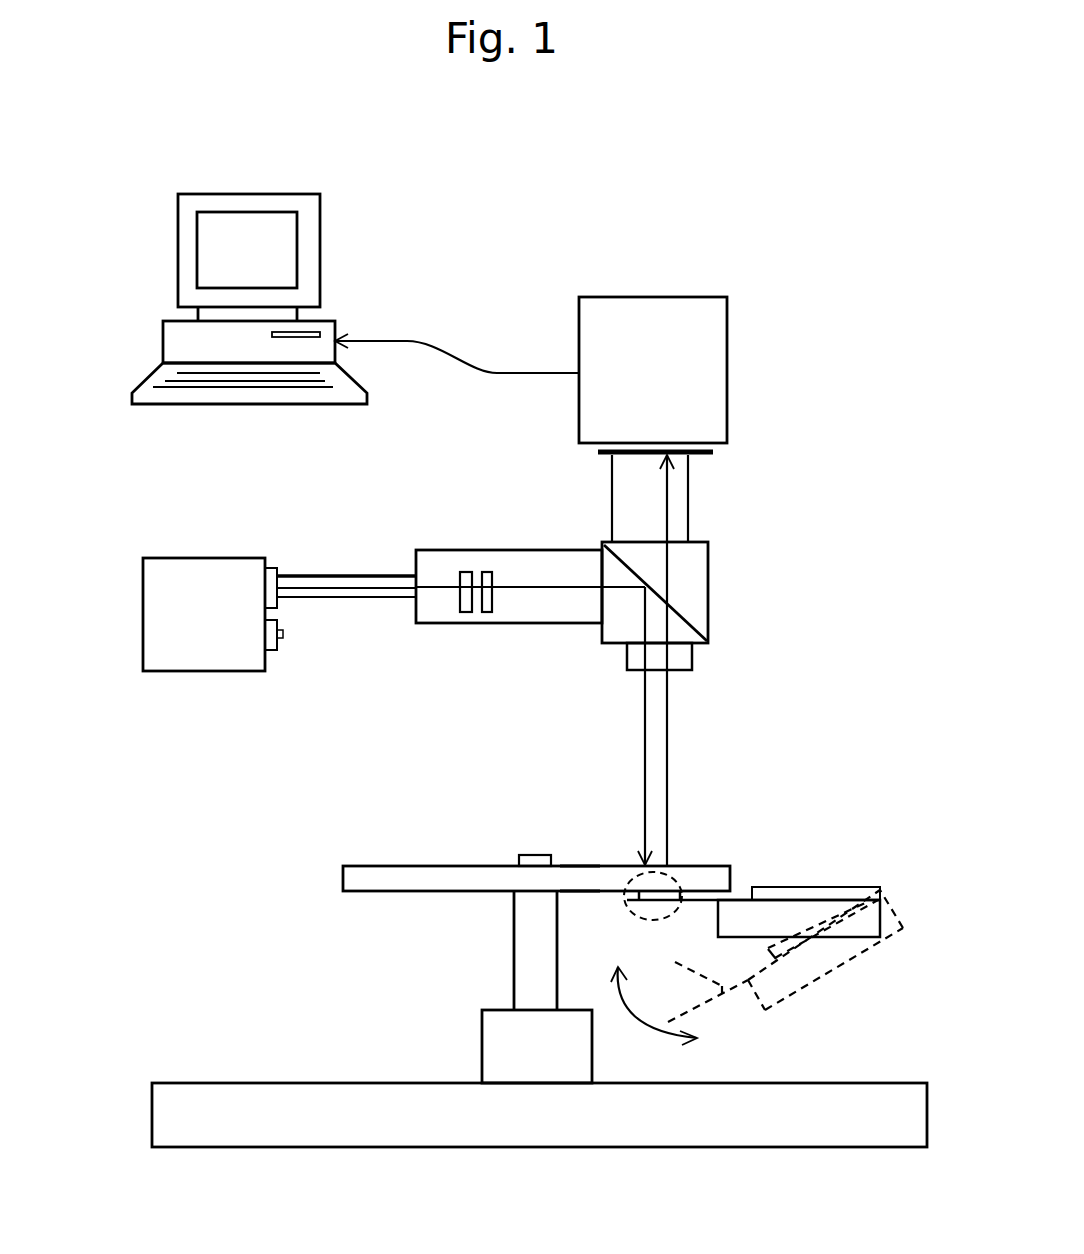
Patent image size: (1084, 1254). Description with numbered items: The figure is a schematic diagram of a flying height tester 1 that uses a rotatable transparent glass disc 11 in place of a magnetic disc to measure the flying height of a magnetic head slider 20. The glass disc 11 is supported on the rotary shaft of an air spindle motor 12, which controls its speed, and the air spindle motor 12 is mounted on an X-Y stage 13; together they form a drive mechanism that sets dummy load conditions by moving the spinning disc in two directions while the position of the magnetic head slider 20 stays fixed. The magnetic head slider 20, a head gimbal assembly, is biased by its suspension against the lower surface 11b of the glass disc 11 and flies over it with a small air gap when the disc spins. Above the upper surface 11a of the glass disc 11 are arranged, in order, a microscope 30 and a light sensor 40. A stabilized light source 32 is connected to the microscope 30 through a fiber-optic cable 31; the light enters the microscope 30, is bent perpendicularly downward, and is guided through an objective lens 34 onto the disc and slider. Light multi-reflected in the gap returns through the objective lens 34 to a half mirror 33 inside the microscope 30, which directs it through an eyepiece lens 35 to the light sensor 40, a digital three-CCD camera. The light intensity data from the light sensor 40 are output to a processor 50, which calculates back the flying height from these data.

The flying height tester 1 is at (748, 174).
The glass disc 11 is at (467, 873).
The upper surface 11a is at (577, 865).
The lower surface 11b is at (577, 893).
The air spindle motor 12 is at (523, 965).
The X-Y stage 13 is at (245, 1098).
The magnetic head slider 20 is at (682, 902).
The microscope 30 is at (527, 562).
The fiber-optic cable 31 is at (340, 580).
The light source 32 is at (207, 665).
The half mirror 33 is at (680, 618).
The objective lens 34 is at (630, 662).
The eyepiece lens 35 is at (713, 455).
The light sensor 40 is at (727, 350).
The processor 50 is at (178, 244).